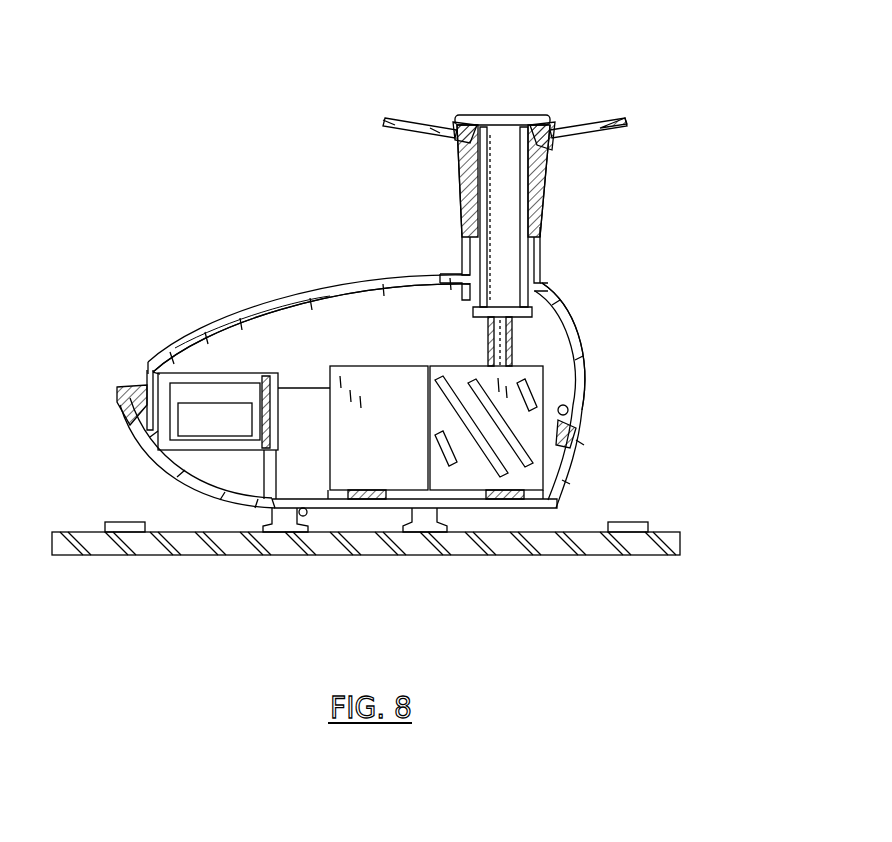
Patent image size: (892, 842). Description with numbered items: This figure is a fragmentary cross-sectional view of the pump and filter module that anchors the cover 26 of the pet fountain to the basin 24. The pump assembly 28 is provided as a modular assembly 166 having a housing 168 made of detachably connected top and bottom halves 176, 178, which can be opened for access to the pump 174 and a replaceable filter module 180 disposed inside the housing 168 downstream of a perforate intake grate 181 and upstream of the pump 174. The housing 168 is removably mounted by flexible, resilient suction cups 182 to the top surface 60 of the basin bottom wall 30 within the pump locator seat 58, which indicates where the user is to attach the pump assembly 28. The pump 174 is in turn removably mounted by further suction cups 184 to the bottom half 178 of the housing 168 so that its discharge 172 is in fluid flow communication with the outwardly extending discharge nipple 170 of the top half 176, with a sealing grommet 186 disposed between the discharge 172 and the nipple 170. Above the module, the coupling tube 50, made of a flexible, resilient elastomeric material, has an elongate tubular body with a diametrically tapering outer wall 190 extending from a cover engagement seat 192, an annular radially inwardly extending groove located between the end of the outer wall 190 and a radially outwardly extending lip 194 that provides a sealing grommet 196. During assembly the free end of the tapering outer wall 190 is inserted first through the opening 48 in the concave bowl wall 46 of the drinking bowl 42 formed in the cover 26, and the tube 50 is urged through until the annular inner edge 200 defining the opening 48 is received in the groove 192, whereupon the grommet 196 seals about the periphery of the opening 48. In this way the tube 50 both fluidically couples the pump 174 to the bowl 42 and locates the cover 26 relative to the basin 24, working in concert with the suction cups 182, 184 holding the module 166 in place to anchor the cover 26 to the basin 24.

The basin 24 is at (118, 568).
The cover 26 is at (408, 106).
The pump assembly 28 is at (572, 285).
The bottom wall 30 is at (215, 557).
The drinking bowl 42 is at (602, 106).
The bowl wall 46 is at (416, 120).
The opening 48 is at (465, 137).
The coupling tube 50 is at (562, 181).
The pump locator seat 58 is at (652, 487).
The top surface 60 is at (68, 531).
The modular assembly 166 is at (192, 300).
The housing 168 is at (167, 338).
The discharge nipple 170 is at (530, 254).
The discharge 172 is at (518, 355).
The pump 174 is at (372, 362).
The top half 176 is at (578, 370).
The bottom half 178 is at (578, 434).
The filter module 180 is at (250, 371).
The intake grate 181 is at (186, 505).
The suction cups 182 is at (284, 533).
The suction cups 184 is at (371, 500).
The sealing grommet 186 is at (513, 345).
The outer wall 190 is at (544, 212).
The cover engagement seat 192 is at (565, 148).
The lip 194 is at (450, 120).
The sealing grommet 196 is at (562, 106).
The inner edge 200 is at (468, 147).